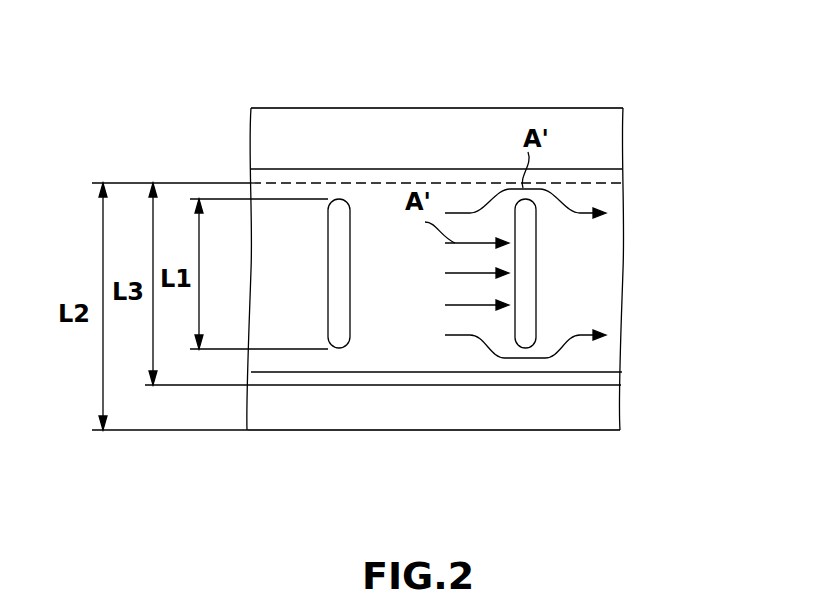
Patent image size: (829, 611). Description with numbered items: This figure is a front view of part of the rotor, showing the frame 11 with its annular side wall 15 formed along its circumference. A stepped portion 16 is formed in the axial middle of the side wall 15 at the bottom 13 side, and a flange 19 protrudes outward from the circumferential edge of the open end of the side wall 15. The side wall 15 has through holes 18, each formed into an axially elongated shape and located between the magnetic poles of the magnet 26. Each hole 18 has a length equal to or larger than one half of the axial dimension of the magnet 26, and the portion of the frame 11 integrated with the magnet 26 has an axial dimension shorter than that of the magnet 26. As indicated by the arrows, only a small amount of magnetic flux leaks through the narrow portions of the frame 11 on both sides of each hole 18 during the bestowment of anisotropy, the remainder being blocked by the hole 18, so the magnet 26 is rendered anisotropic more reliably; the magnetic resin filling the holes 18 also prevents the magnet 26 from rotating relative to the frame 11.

The frame 11 is at (598, 96).
The bottom 13 is at (435, 108).
The side wall 15 is at (622, 270).
The stepped portion 16 is at (624, 179).
The through hole 18 is at (348, 286).
The flange 19 is at (620, 378).
The magnet 26 is at (438, 432).